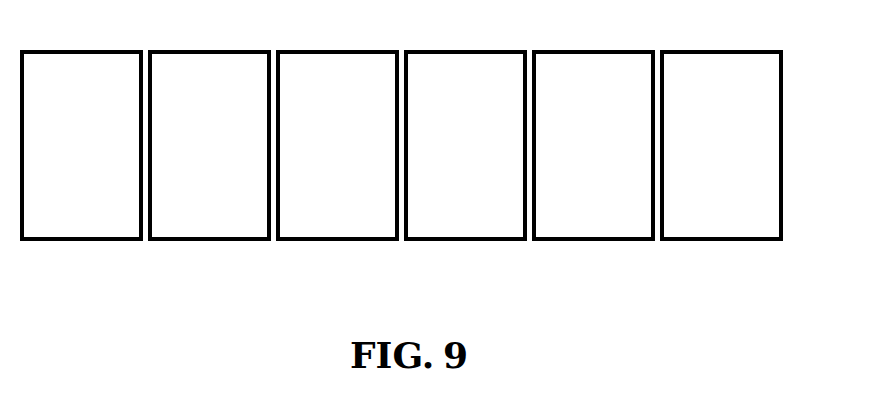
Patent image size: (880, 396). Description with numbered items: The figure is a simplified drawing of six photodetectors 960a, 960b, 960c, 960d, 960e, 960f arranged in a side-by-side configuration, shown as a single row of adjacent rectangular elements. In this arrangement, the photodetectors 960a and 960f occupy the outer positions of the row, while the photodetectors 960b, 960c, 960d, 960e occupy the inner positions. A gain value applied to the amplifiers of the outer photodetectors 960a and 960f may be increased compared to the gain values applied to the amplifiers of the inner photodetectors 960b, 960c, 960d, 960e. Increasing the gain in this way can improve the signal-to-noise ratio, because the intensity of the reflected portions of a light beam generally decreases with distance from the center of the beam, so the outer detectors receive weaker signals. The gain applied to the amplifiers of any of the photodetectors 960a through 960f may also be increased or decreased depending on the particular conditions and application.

The photodetector 960a is at (50, 83).
The photodetector 960b is at (240, 205).
The photodetector 960c is at (304, 83).
The photodetector 960d is at (502, 205).
The photodetector 960e is at (559, 83).
The photodetector 960f is at (757, 205).